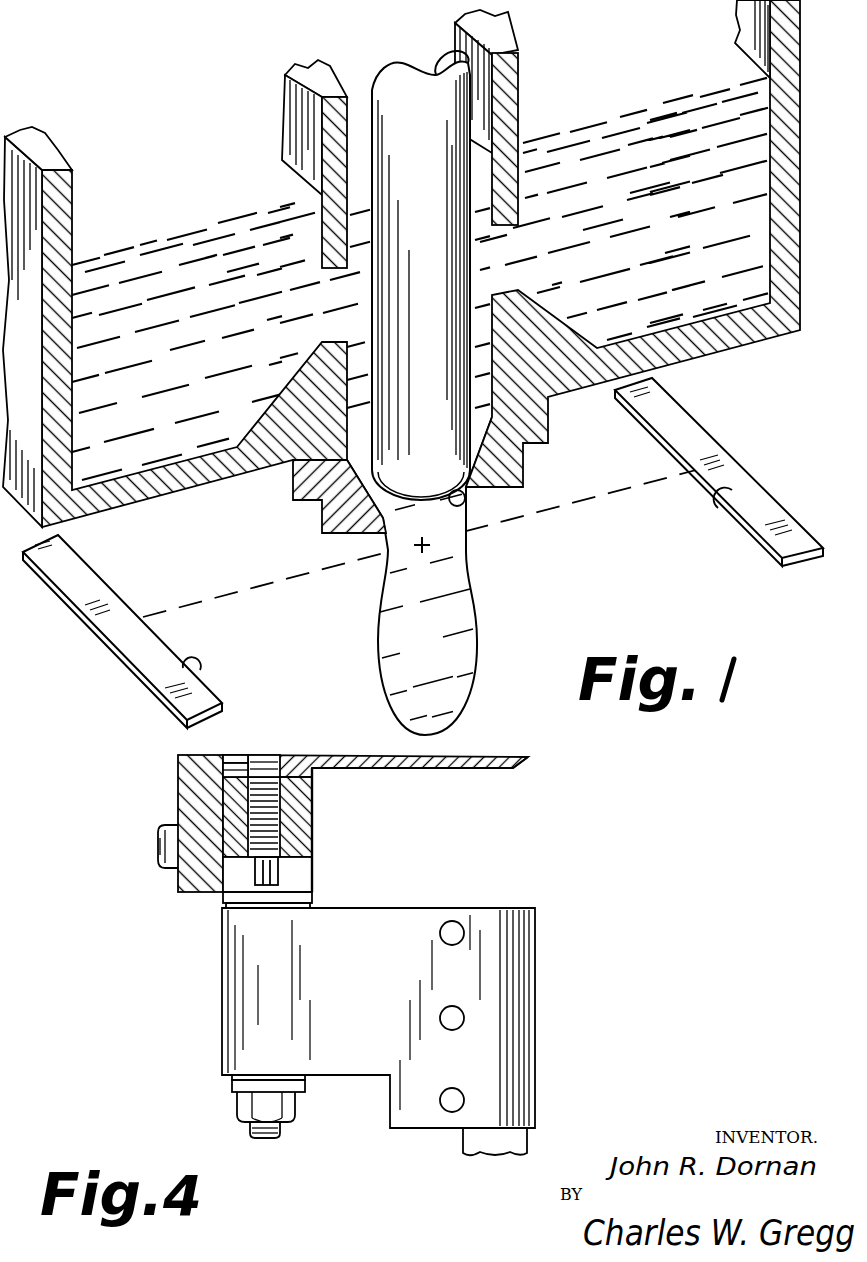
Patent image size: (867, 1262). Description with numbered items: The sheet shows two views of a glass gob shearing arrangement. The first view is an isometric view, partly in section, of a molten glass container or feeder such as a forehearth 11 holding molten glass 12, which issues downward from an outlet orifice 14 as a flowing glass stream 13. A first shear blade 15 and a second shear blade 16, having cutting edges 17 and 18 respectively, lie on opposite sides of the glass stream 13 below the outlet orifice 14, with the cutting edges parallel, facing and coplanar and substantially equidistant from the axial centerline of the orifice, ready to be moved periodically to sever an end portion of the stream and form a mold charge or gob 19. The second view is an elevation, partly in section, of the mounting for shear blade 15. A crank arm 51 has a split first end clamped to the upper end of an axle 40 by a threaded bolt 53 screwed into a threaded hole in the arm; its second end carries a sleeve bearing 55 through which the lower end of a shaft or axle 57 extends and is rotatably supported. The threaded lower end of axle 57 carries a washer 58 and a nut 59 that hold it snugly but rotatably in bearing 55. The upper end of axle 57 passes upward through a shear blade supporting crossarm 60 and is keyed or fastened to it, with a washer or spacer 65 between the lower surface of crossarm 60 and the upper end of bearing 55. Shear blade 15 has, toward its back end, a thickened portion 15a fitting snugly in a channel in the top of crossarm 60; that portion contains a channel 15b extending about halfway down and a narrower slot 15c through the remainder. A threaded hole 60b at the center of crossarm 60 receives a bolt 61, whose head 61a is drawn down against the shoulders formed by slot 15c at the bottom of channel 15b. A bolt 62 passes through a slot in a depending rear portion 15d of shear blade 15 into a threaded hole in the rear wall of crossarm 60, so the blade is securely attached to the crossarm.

In FIG. 1, the forehearth 11 is at (761, 353).
In FIG. 1, the molten glass 12 is at (740, 254).
In FIG. 1, the glass stream 13 is at (437, 576).
In FIG. 1, the outlet orifice 14 is at (467, 511).
In FIG. 1, the first shear blade 15 is at (77, 646).
In FIG. 4, the first shear blade 15 is at (421, 761).
In FIG. 4, the thickened portion 15a is at (314, 772).
In FIG. 4, the channel 15b is at (233, 758).
In FIG. 4, the slot 15c is at (230, 773).
In FIG. 4, the depending rear portion 15d is at (197, 798).
In FIG. 1, the second shear blade 16 is at (704, 410).
In FIG. 1, the cutting edge 17 is at (150, 675).
In FIG. 4, the cutting edge 17 is at (532, 757).
In FIG. 1, the cutting edge 18 is at (733, 490).
In FIG. 1, the gob 19 is at (438, 651).
In FIG. 4, the axle 40 is at (510, 1139).
In FIG. 4, the crank arm 51 is at (370, 1007).
In FIG. 4, the threaded bolt 53 is at (457, 1092).
In FIG. 4, the sleeve bearing 55 is at (228, 905).
In FIG. 4, the axle 57 is at (248, 1128).
In FIG. 4, the washer 58 is at (305, 1088).
In FIG. 4, the nut 59 is at (288, 1108).
In FIG. 4, the shear blade supporting crossarm 60 is at (297, 837).
In FIG. 4, the threaded hole 60b is at (268, 820).
In FIG. 4, the bolt 61 is at (317, 831).
In FIG. 4, the head 61a is at (264, 757).
In FIG. 4, the bolt 62 is at (158, 848).
In FIG. 4, the washer 65 is at (305, 897).